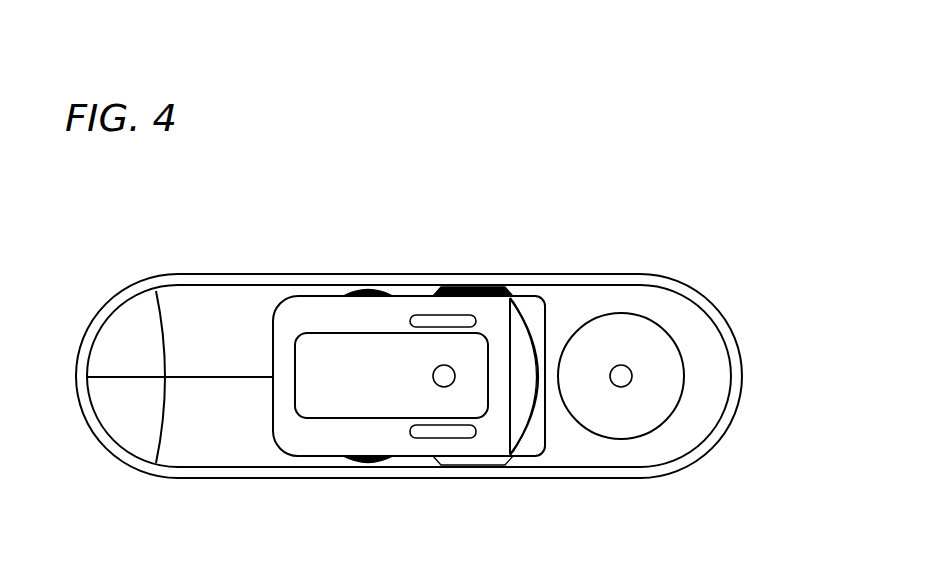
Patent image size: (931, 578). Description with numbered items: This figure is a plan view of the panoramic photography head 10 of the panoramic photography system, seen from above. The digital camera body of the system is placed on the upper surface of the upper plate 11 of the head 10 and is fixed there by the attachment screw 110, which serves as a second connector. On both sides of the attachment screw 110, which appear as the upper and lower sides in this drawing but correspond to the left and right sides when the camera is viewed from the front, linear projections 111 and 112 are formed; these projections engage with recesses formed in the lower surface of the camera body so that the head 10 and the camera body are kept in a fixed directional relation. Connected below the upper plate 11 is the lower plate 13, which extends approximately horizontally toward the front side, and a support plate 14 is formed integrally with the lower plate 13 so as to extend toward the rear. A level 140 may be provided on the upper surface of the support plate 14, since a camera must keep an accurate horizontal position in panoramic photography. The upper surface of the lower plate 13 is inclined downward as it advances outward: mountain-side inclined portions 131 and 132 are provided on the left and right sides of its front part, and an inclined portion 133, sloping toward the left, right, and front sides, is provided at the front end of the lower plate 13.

The head 10 is at (598, 210).
The upper plate 11 is at (260, 273).
The lower plate 13 is at (197, 438).
The mountain-side inclined portion 131 is at (257, 438).
The mountain-side inclined portion 132 is at (205, 322).
The inclined portion 133 is at (120, 347).
The attachment screw 110 is at (449, 364).
The linear projection 111 is at (433, 314).
The linear projection 112 is at (433, 439).
The support plate 14 is at (670, 436).
The level 140 is at (684, 375).